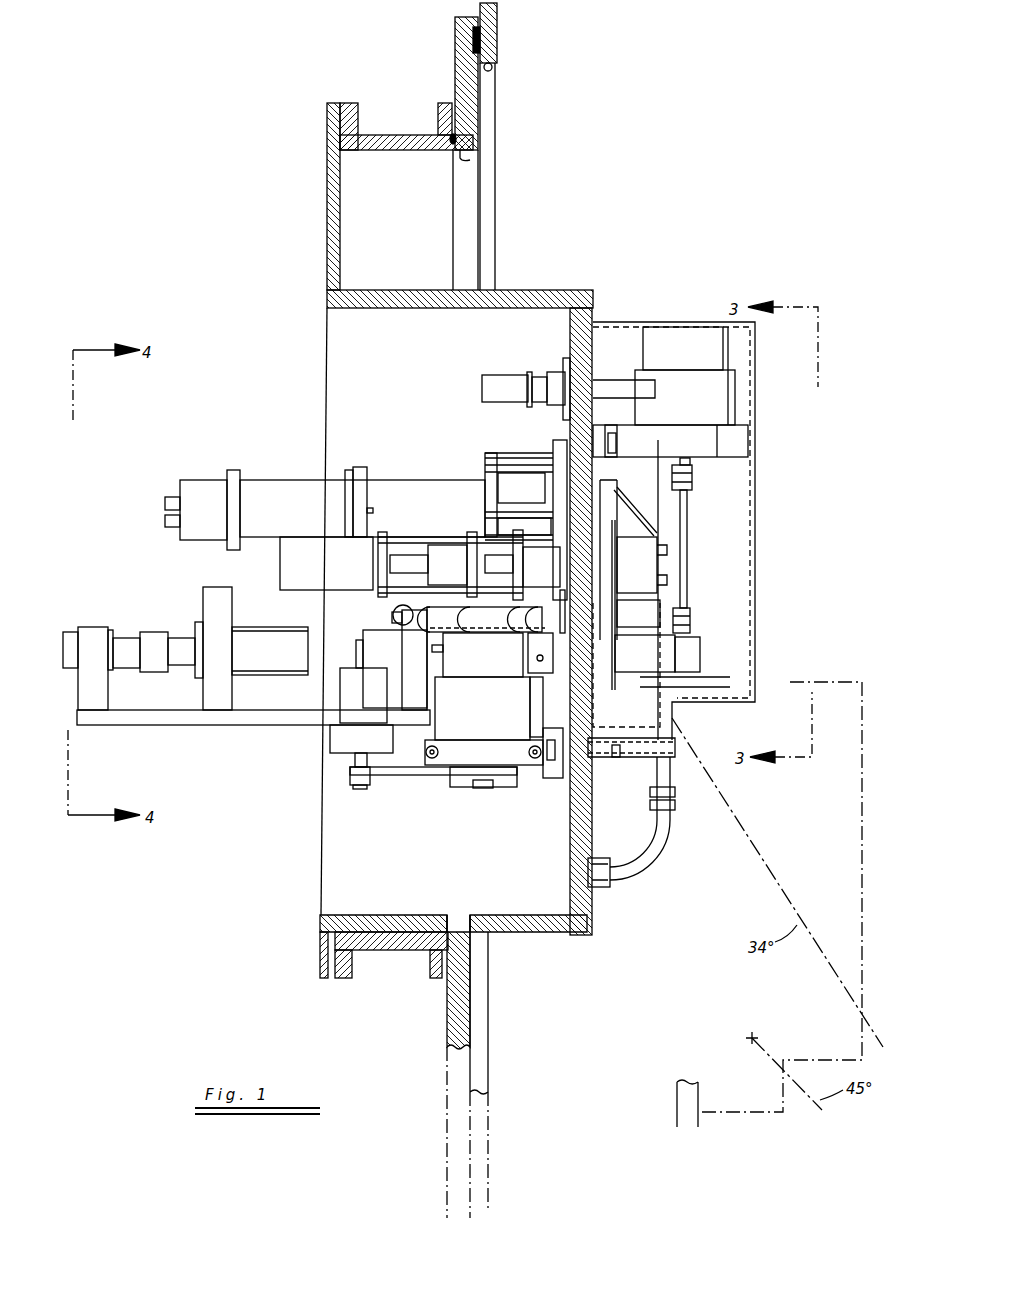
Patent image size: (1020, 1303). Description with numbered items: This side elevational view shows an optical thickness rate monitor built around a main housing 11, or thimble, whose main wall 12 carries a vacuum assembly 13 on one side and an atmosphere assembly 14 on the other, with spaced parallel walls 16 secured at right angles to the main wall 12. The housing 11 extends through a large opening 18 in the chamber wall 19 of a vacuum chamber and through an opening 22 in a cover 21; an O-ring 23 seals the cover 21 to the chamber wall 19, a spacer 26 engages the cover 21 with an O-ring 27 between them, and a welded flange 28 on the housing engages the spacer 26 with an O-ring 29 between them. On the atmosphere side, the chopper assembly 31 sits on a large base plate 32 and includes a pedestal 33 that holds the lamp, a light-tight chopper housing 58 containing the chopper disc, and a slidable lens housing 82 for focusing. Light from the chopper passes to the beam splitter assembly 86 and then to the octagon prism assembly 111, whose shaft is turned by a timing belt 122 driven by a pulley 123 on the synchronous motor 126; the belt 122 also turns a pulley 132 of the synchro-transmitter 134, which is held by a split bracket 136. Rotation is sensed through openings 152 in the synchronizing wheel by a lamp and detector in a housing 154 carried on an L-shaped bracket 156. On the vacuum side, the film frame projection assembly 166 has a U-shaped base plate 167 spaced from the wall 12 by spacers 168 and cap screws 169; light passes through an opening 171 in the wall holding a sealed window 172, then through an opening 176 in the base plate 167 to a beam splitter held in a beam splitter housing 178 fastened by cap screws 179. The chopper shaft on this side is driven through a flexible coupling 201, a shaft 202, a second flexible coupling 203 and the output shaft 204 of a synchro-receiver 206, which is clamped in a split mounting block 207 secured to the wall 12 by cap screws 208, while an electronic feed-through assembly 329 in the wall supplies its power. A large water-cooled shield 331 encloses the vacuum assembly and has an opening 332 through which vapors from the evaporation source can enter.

The main housing 11 is at (623, 268).
The main wall 12 is at (585, 375).
The vacuum assembly 13 is at (775, 629).
The atmosphere assembly 14 is at (275, 440).
The spaced parallel walls 16 is at (530, 290).
The opening 18 is at (493, 70).
The chamber wall 19 is at (497, 8).
The cover 21 is at (455, 60).
The opening 22 is at (470, 160).
The O-ring 23 is at (497, 40).
The spacer 26 is at (405, 135).
The O-ring 27 is at (456, 140).
The flange 28 is at (333, 190).
The O-ring 29 is at (327, 140).
The chopper assembly 31 is at (128, 607).
The base plate 32 is at (245, 718).
The pedestal 33 is at (100, 695).
The chopper housing 58 is at (222, 653).
The lens housing 82 is at (278, 662).
The beam splitter assembly 86 is at (357, 660).
The octagon prism assembly 111 is at (542, 680).
The timing belt 122 is at (425, 775).
The pulley 123 is at (360, 787).
The synchronous motor 126 is at (372, 707).
The pulley 132 is at (485, 790).
The synchro-transmitter 134 is at (492, 718).
The split bracket 136 is at (492, 765).
The openings 152 is at (477, 655).
The housing 154 is at (440, 620).
The L-shaped bracket 156 is at (413, 640).
The film frame projection assembly 166 is at (735, 620).
The U-shaped base plate 167 is at (627, 740).
The spacers 168 is at (600, 797).
The cap screws 169 is at (625, 765).
The opening 171 is at (528, 640).
The window 172 is at (567, 785).
The opening 176 is at (565, 603).
The beam splitter housing 178 is at (648, 661).
The cap screws 179 is at (642, 580).
The flexible coupling 201 is at (688, 623).
The shaft 202 is at (687, 518).
The flexible coupling 203 is at (692, 480).
The output shaft 204 is at (688, 461).
The synchro-receiver 206 is at (700, 408).
The split mounting block 207 is at (735, 447).
The cap screws 208 is at (640, 444).
The electronic feed-through assembly 329 is at (505, 385).
The water-cooled shield 331 is at (757, 347).
The opening 332 is at (675, 718).